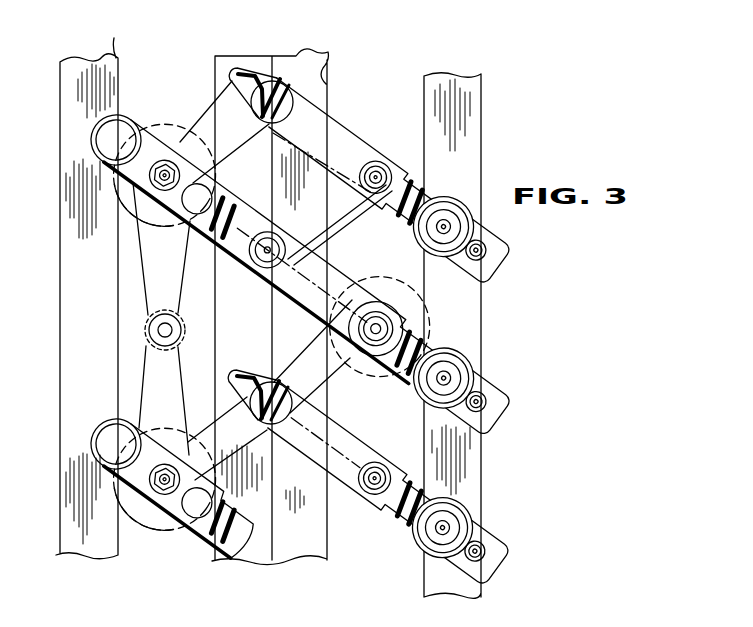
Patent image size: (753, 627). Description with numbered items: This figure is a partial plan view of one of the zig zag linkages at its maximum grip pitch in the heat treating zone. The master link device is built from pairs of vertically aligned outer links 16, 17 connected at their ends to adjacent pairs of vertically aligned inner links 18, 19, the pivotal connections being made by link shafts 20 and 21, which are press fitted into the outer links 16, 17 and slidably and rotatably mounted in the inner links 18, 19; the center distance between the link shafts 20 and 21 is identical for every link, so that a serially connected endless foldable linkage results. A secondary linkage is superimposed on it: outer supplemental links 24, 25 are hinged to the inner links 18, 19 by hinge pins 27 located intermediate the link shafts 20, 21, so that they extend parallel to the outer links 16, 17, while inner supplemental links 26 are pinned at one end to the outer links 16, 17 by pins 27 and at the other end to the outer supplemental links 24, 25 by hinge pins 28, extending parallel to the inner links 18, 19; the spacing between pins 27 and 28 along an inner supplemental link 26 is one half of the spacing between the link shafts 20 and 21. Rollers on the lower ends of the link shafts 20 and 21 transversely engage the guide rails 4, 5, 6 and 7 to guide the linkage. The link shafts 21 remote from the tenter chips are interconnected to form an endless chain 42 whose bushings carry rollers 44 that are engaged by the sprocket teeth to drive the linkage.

The guide rail 4 is at (112, 541).
The guide rail 5 is at (212, 555).
The guide rail 6 is at (320, 528).
The guide rail 7 is at (430, 573).
The outer link 16 is at (311, 304).
The outer link 17 is at (485, 390).
The inner link 18 is at (210, 126).
The inner link 19 is at (299, 371).
The link shaft 20 is at (371, 316).
The link shaft 21 is at (217, 178).
The outer supplemental link 24 is at (345, 134).
The outer supplemental link 25 is at (431, 196).
The inner supplemental link 26 is at (339, 214).
The hinge pin 27 is at (264, 262).
The hinge pin 28 is at (378, 164).
The endless chain 42 is at (172, 268).
The roller 44 is at (147, 330).